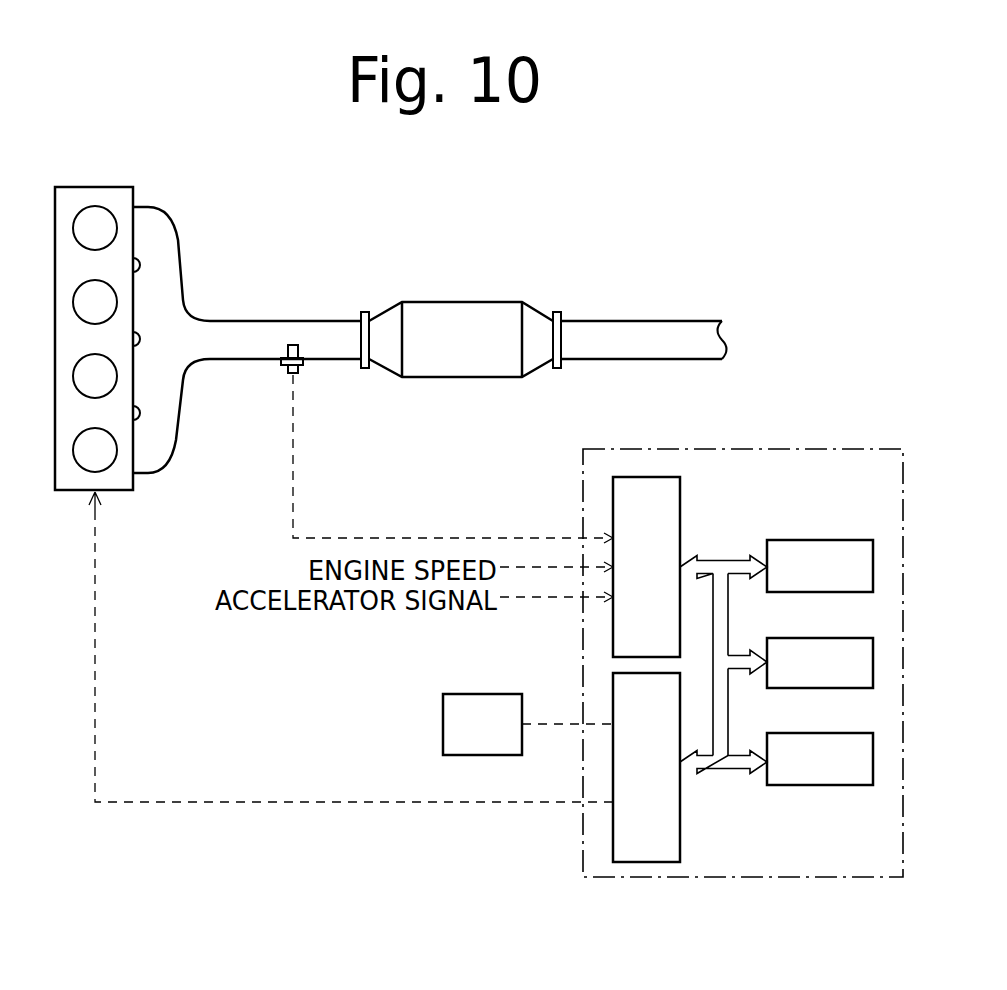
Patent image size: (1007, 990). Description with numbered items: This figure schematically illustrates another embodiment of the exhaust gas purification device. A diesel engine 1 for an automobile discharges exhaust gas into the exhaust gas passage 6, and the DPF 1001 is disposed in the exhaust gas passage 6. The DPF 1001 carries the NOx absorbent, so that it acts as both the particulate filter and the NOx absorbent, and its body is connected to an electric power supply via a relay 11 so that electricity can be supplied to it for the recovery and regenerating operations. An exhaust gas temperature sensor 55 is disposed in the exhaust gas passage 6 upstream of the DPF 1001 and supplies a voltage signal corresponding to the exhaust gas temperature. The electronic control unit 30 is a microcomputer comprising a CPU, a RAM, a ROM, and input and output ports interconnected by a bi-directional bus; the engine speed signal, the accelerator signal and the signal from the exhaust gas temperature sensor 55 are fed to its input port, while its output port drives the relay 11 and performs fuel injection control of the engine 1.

The engine 1 is at (97, 187).
The exhaust gas passage 6 is at (276, 321).
The DPF 1001 is at (470, 308).
The exhaust gas temperature sensor 55 is at (300, 370).
The relay 11 is at (497, 741).
The electronic control unit 30 is at (836, 877).